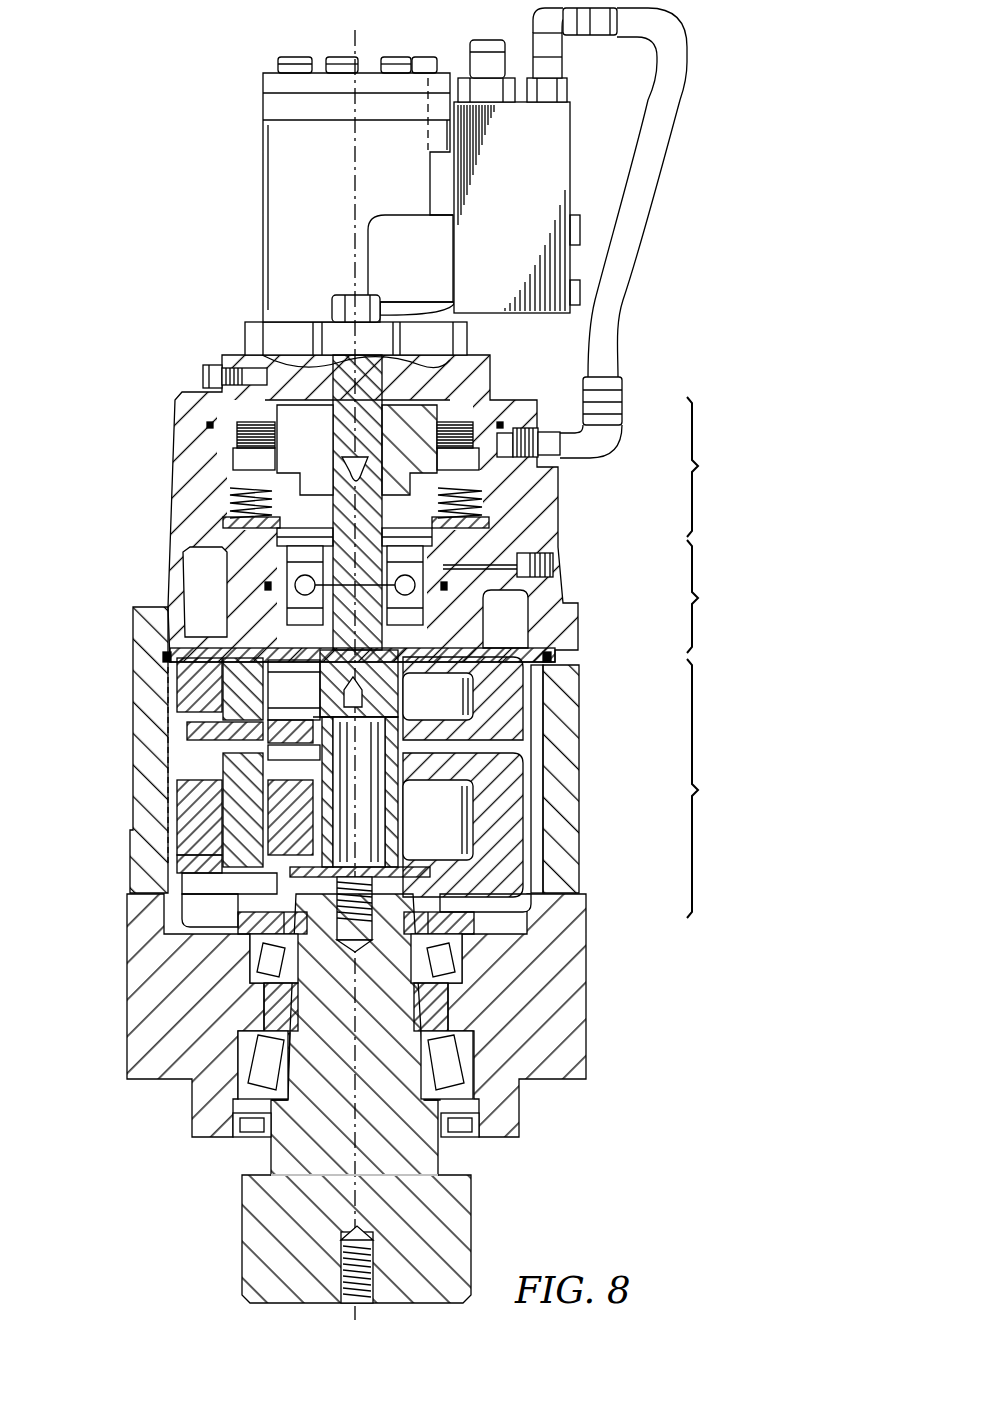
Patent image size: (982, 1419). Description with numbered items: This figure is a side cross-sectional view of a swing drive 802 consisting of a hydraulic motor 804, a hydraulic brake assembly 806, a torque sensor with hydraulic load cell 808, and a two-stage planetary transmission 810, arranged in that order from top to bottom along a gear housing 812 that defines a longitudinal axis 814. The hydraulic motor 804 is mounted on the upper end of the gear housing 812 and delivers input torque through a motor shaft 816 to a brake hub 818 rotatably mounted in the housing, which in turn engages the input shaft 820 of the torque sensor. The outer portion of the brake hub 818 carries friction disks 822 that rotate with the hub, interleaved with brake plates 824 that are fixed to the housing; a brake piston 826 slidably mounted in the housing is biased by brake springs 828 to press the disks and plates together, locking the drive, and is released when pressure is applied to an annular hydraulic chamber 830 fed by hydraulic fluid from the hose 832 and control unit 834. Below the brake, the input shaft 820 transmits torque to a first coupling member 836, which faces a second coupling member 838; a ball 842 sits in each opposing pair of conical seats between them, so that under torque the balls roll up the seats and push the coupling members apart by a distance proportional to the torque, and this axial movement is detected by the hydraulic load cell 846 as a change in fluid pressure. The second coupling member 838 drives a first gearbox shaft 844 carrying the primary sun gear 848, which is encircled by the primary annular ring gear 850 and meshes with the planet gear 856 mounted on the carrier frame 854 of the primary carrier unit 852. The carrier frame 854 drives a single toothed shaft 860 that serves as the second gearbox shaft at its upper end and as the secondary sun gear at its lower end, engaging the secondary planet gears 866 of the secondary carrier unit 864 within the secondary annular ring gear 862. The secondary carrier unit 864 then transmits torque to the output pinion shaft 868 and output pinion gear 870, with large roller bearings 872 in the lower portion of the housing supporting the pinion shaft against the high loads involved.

The swing drive 802 is at (531, 1161).
The hydraulic motor 804 is at (262, 160).
The hydraulic brake assembly 806 is at (455, 508).
The torque sensor with hydraulic load cell 808 is at (715, 596).
The two-stage planetary transmission 810 is at (715, 788).
The gear housing 812 is at (185, 393).
The longitudinal axis 814 is at (356, 222).
The motor shaft 816 is at (292, 400).
The brake hub 818 is at (262, 353).
The input shaft 820 is at (327, 493).
The friction disks 822 is at (212, 428).
The brake plates 824 is at (238, 452).
The brake piston 826 is at (493, 480).
The brake springs 828 is at (247, 520).
The annular hydraulic chamber 830 is at (497, 425).
The hose 832 is at (622, 355).
The control unit 834 is at (570, 112).
The first coupling member 836 is at (275, 577).
The second coupling member 838 is at (225, 648).
The ball 842 is at (292, 590).
The first gearbox shaft 844 is at (470, 648).
The hydraulic load cell 846 is at (410, 533).
The primary sun gear 848 is at (510, 722).
The primary annular ring gear 850 is at (130, 730).
The primary carrier unit 852 is at (508, 625).
The carrier frame 854 is at (510, 685).
The planet gear 856 is at (187, 683).
The second gearbox shaft / secondary sun gear 860 is at (403, 797).
The secondary annular ring gear 862 is at (140, 793).
The secondary carrier unit 864 is at (512, 797).
The secondary planet gears 866 is at (183, 823).
The output pinion shaft 868 is at (310, 995).
The output pinion gear 870 is at (242, 1256).
The roller bearings 872 is at (442, 959).